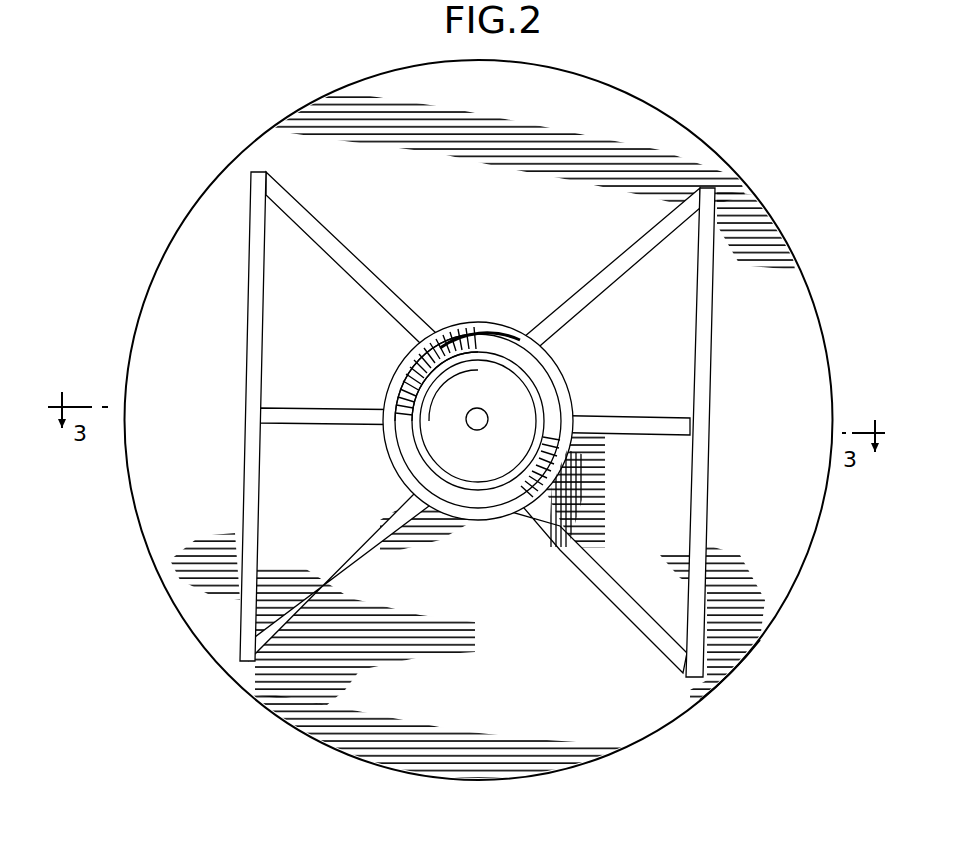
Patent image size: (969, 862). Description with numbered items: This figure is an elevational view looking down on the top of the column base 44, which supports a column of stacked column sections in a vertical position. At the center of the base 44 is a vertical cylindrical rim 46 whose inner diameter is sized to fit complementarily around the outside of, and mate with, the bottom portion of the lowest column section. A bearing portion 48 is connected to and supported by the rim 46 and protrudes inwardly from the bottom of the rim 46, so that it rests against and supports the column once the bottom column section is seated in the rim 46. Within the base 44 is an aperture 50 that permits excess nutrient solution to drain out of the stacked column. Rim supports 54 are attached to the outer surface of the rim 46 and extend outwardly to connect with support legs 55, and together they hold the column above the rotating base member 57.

The disc 44 is at (746, 179).
The hub 46 is at (497, 347).
The bearing 48 is at (460, 342).
The shaft hole 50 is at (479, 429).
The spokes 54 is at (594, 280).
The frame bar 55 is at (708, 575).
The rim 57 is at (775, 626).